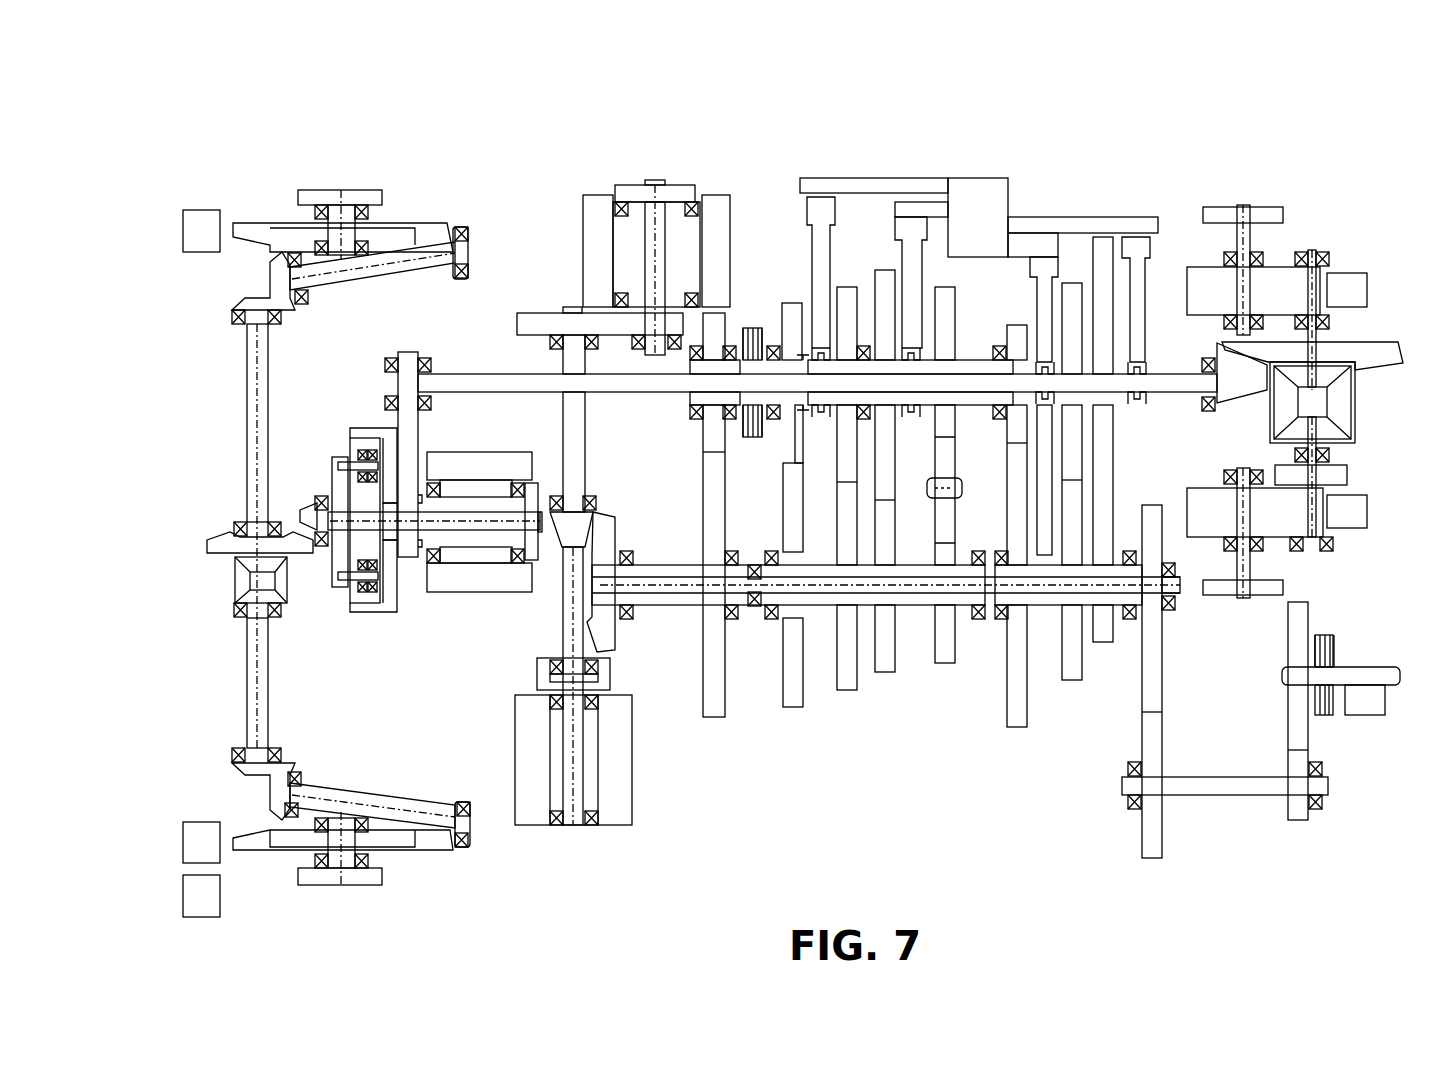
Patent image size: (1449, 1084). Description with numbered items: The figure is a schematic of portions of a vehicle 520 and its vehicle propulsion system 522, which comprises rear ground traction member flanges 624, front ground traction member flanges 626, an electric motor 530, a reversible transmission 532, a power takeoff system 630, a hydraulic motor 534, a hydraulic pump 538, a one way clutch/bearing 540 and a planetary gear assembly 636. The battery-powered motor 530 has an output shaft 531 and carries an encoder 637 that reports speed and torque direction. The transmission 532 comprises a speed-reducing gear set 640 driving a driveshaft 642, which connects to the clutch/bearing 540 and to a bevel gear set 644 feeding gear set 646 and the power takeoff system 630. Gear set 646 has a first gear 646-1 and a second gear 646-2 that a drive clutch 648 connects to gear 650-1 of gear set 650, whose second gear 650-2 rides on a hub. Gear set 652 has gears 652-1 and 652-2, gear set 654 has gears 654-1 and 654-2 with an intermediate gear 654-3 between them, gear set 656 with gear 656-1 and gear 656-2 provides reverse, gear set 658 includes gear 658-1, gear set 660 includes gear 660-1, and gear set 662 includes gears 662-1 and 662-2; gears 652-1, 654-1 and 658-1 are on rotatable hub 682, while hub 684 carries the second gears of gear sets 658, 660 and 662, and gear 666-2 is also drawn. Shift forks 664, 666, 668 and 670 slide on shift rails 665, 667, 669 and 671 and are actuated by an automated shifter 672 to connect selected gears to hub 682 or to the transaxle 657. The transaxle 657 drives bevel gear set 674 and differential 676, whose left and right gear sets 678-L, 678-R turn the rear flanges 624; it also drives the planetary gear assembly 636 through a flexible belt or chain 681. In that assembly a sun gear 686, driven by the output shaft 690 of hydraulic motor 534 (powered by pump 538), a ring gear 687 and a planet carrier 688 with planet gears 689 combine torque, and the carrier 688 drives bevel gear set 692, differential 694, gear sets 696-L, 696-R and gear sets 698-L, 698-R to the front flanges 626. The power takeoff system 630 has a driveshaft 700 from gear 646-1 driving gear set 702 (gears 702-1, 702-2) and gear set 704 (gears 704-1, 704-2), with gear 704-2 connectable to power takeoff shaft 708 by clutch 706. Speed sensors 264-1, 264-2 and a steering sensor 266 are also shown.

The vehicle 520 is at (323, 108).
The vehicle propulsion system 522 is at (525, 166).
The electric motor 530 is at (725, 195).
The output shaft 531 is at (655, 352).
The reversible transmission 532 is at (1048, 185).
The hydraulic motor 534 is at (480, 452).
The hydraulic pump 538 is at (632, 760).
The one way clutch/bearing 540 is at (537, 676).
The rear ground traction member flanges 624 is at (1283, 219).
The front ground traction member flanges 626 is at (298, 198).
The power takeoff system 630 is at (1365, 782).
The planetary gear assembly 636 is at (363, 647).
The encoder 637 is at (640, 188).
The gear set 640 is at (522, 313).
The driveshaft 642 is at (563, 372).
The gear set 644 is at (610, 512).
The gear set 646 is at (788, 488).
The first gear 646-1 is at (714, 718).
The second gear 646-2 is at (718, 325).
The drive clutch 648 is at (752, 328).
The gear set 650 is at (767, 526).
The first gear 650-1 is at (793, 304).
The second gear 650-2 is at (783, 680).
The gear set 652 is at (837, 506).
The first gear 652-1 is at (846, 288).
The second gear 652-2 is at (835, 532).
The gear set 654 is at (935, 502).
The first gear 654-1 is at (895, 455).
The second gear 654-2 is at (897, 660).
The intermediate gear 654-3 is at (957, 513).
The gear set 656 is at (960, 518).
The first gear 656-1 is at (955, 330).
The second gear 656-2 is at (953, 655).
The transaxle 657 is at (470, 374).
The gear set 658 is at (1010, 556).
The first gear 658-1 is at (1024, 435).
The gear set 660 is at (1062, 498).
The first gear 660-1 is at (1072, 295).
The gear set 662 is at (1104, 469).
The first gear 662-1 is at (1113, 452).
The second gear 662-2 is at (1113, 510).
The shift fork 664 is at (808, 217).
The shift rail 665 is at (846, 177).
The shift fork 666 is at (902, 246).
The gear 666-2 is at (1062, 670).
The shift rail 667 is at (918, 205).
The shift fork 668 is at (1035, 305).
The shift rail 669 is at (1050, 237).
The shift fork 670 is at (1148, 249).
The shift rail 671 is at (1120, 217).
The automated shifter 672 is at (985, 178).
The gear set 674 is at (1398, 344).
The differential 676 is at (1355, 421).
The left gear set 678-L is at (1325, 270).
The right gear set 678-R is at (1325, 526).
The flexible belt or chain 681 is at (398, 412).
The rotatable hub 682 is at (973, 410).
The rotatable hub 684 is at (1045, 555).
The sun gear 686 is at (353, 544).
The ring gear 687 is at (385, 612).
The planet carrier 688 is at (347, 460).
The planet gears 689 is at (360, 450).
The output shaft 690 is at (430, 553).
The gear set 692 is at (215, 530).
The differential 694 is at (235, 581).
The gear set 696-L is at (240, 302).
The gear set 696-R is at (240, 768).
The gear set 698-L is at (438, 227).
The gear set 698-R is at (465, 850).
The driveshaft 700 is at (752, 565).
The gear set 702 is at (1194, 710).
The first gear 702-1 is at (1162, 682).
The second gear 702-2 is at (1162, 837).
The gear set 704 is at (1283, 754).
The first gear 704-1 is at (1298, 822).
The second gear 704-2 is at (1288, 713).
The power takeoff clutch 706 is at (1333, 650).
The power takeoff shaft 708 is at (1393, 685).
The speed sensor 264-1 is at (1367, 290).
The speed sensor 264-2 is at (183, 227).
The steering sensor 266 is at (183, 895).